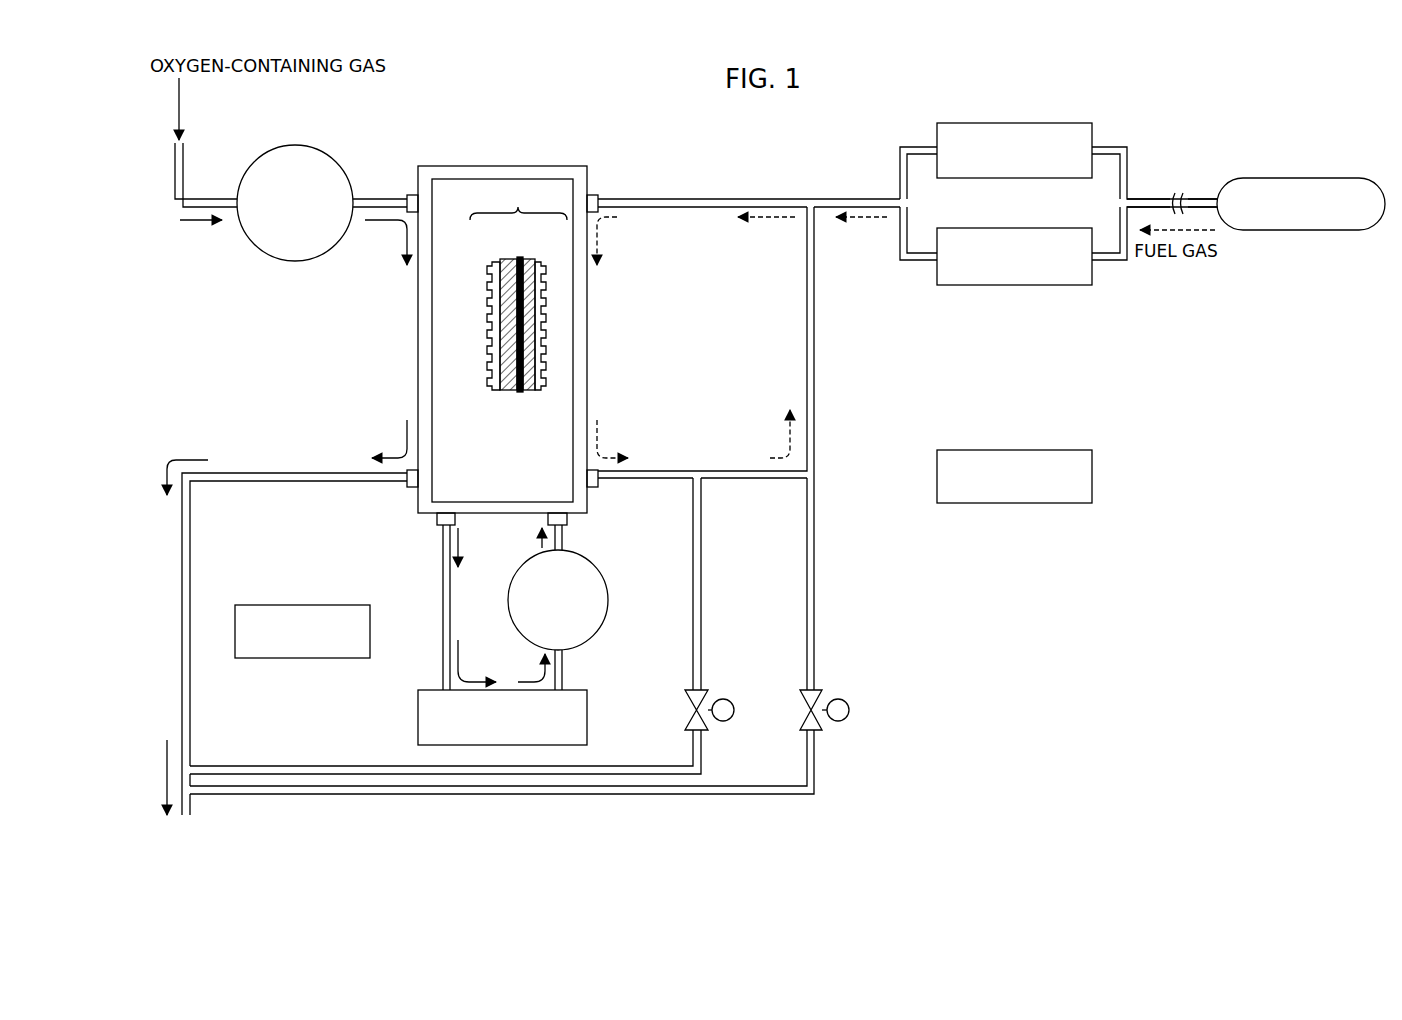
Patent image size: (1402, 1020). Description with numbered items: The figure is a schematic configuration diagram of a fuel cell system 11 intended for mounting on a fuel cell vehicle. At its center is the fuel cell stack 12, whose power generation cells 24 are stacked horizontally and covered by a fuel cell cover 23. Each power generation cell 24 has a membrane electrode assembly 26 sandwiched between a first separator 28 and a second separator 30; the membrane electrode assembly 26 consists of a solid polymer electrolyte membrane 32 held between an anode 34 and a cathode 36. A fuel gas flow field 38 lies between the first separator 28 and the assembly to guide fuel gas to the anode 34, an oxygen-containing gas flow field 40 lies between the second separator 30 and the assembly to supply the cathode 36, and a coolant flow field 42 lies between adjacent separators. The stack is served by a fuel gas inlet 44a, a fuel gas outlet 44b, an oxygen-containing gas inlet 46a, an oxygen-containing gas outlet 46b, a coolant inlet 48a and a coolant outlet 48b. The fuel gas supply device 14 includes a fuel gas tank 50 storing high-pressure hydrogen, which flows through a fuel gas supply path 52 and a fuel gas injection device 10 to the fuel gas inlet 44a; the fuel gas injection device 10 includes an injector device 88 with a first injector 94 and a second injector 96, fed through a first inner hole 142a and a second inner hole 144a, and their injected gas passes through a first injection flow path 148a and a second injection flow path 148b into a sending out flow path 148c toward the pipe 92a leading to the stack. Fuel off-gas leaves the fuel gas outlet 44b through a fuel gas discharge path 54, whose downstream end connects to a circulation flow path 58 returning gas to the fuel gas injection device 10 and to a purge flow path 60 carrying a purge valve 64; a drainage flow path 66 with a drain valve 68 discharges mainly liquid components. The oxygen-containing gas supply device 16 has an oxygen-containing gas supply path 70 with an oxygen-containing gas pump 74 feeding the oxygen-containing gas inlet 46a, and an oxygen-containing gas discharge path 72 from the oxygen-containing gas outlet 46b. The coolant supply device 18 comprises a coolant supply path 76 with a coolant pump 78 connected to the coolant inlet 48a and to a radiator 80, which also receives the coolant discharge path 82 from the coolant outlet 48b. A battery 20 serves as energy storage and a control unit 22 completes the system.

The fuel gas injection device 10 is at (972, 100).
The fuel cell system 11 is at (1294, 95).
The fuel cell stack 12 is at (520, 155).
The fuel gas supply device 14 is at (1208, 142).
The oxygen-containing gas supply device 16 is at (243, 150).
The coolant supply device 18 is at (403, 726).
The battery 20 is at (305, 605).
The control unit 22 is at (1056, 450).
The fuel cell cover 23 is at (418, 318).
The power generation cell 24 is at (480, 183).
The membrane electrode assembly 26 is at (518, 203).
The first separator 28 is at (546, 287).
The second separator 30 is at (490, 272).
The solid polymer electrolyte membrane 32 is at (520, 257).
The anode 34 is at (530, 262).
The cathode 36 is at (506, 262).
The fuel gas flow field 38 is at (530, 345).
The oxygen-containing gas flow field 40 is at (500, 285).
The coolant flow field 42 is at (487, 366).
The fuel gas inlet 44a is at (592, 195).
The fuel gas outlet 44b is at (594, 487).
The oxygen-containing gas inlet 46a is at (413, 195).
The oxygen-containing gas outlet 46b is at (412, 487).
The coolant inlet 48a is at (548, 522).
The coolant outlet 48b is at (437, 525).
The fuel gas tank 50 is at (1305, 178).
The fuel gas supply path 52 is at (1152, 196).
The fuel gas discharge path 54 is at (773, 479).
The circulation flow path 58 is at (815, 418).
The purge flow path 60 is at (815, 508).
The purge valve 64 is at (840, 699).
The drainage flow path 66 is at (269, 766).
The drain valve 68 is at (727, 699).
The oxygen-containing gas supply path 70 is at (218, 196).
The oxygen-containing gas discharge path 72 is at (338, 482).
The oxygen-containing gas pump 74 is at (305, 150).
The coolant supply path 76 is at (563, 545).
The coolant pump 78 is at (600, 626).
The radiator 80 is at (418, 706).
The coolant discharge path 82 is at (443, 615).
The injector device 88 is at (1103, 110).
The fuel gas pipe 92a is at (707, 198).
The first injector 94 is at (1062, 123).
The second injector 96 is at (1062, 285).
The first inner hole 142a is at (1108, 147).
The second inner hole 144a is at (1106, 262).
The first injection flow path 148a is at (921, 146).
The second injection flow path 148b is at (921, 261).
The sending out flow path 148c is at (856, 198).